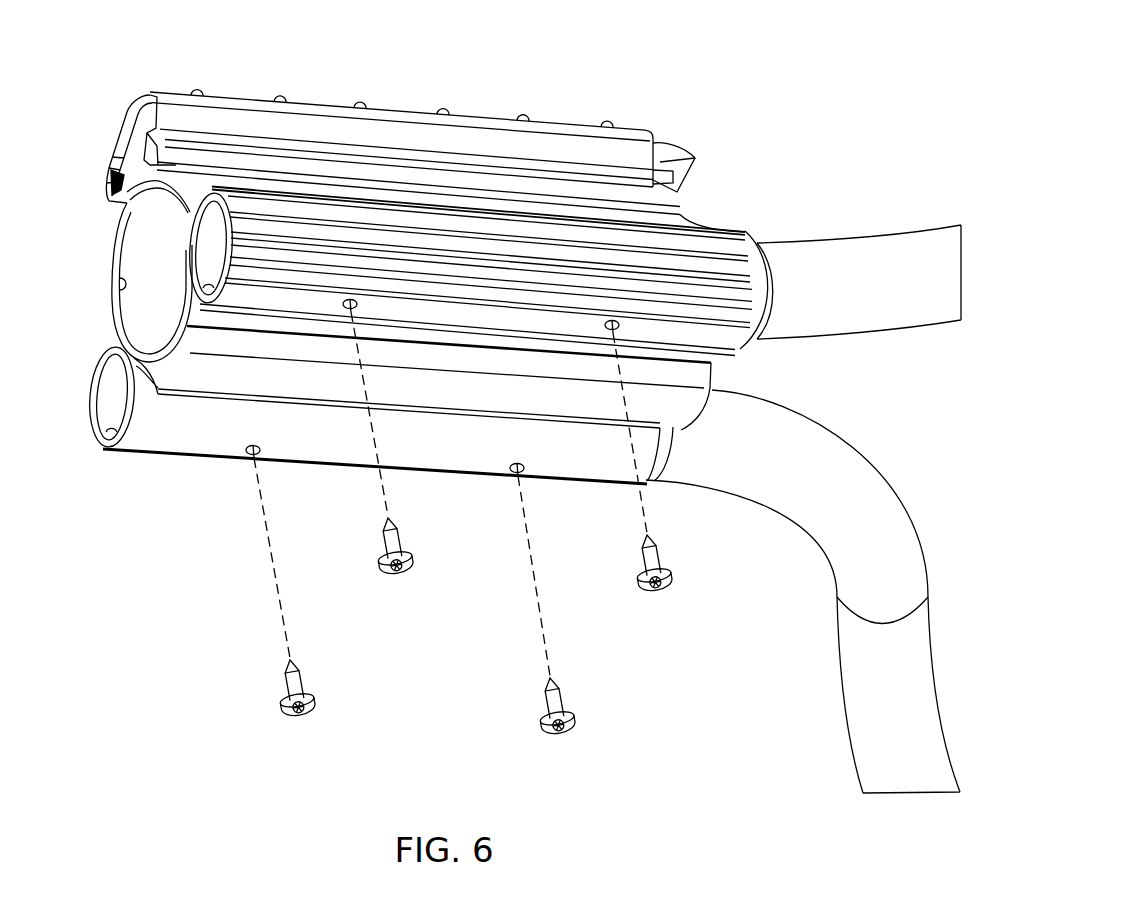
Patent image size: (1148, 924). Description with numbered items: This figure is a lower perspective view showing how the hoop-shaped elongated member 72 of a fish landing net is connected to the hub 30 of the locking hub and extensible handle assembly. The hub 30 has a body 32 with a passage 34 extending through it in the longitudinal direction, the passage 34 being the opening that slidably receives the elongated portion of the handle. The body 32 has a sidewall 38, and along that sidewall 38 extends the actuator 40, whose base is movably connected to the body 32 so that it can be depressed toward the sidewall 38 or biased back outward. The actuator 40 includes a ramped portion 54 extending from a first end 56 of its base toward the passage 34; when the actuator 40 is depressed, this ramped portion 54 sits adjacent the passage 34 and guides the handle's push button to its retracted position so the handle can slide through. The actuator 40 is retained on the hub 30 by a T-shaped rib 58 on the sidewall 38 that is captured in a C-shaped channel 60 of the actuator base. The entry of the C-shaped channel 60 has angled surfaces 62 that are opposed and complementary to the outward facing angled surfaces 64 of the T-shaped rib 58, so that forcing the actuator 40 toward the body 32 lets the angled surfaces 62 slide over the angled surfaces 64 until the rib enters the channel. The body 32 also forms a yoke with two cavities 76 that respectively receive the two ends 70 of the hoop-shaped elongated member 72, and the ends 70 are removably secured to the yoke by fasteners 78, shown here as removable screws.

The hub 30 is at (225, 462).
The body 32 is at (118, 343).
The passage 34 is at (124, 287).
The sidewall 38 is at (178, 162).
The actuator 40 is at (493, 113).
The ramped portion 54 is at (688, 179).
The first end 56 is at (625, 131).
The T-shaped rib 58 is at (117, 148).
The C-shaped channel 60 is at (135, 118).
The angled surfaces 62 is at (160, 140).
The outward facing angled surfaces 64 is at (119, 166).
The ends 70 is at (793, 270).
The hoop-shaped elongated member 72 is at (845, 735).
The cavities 76 is at (106, 447).
The fasteners 78 is at (297, 718).